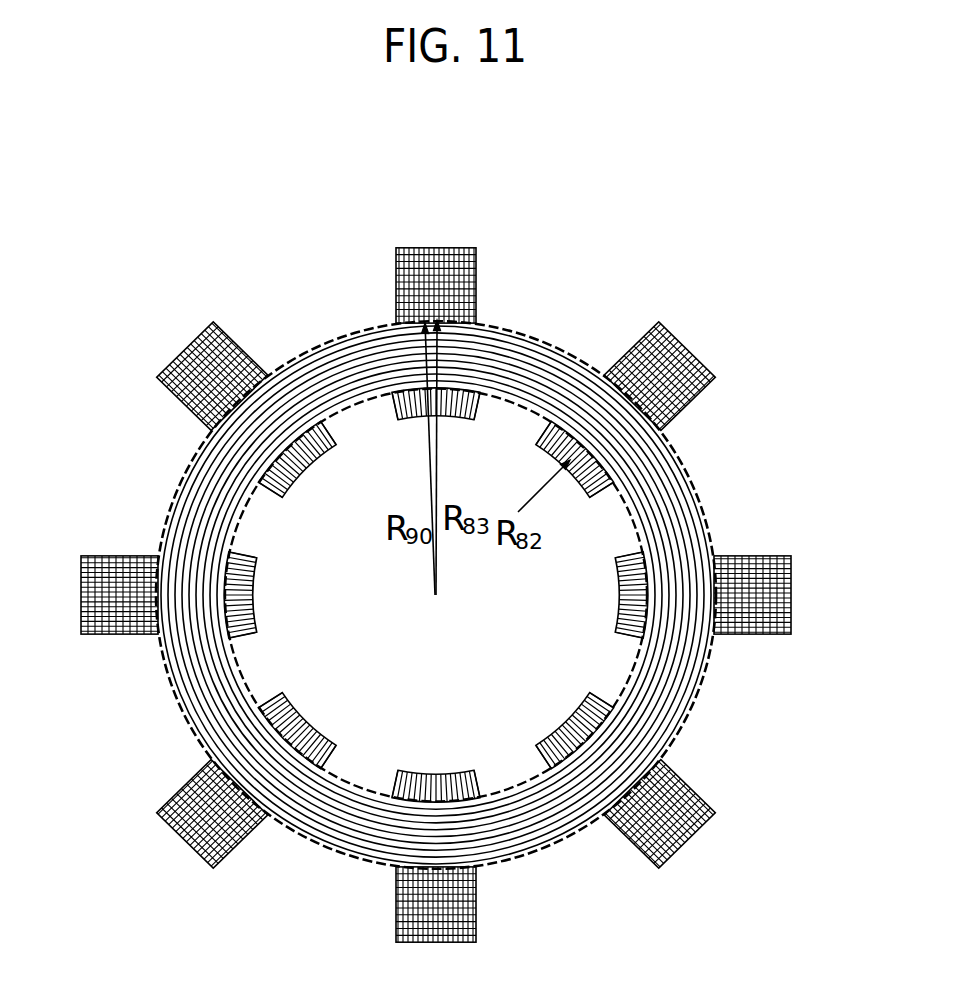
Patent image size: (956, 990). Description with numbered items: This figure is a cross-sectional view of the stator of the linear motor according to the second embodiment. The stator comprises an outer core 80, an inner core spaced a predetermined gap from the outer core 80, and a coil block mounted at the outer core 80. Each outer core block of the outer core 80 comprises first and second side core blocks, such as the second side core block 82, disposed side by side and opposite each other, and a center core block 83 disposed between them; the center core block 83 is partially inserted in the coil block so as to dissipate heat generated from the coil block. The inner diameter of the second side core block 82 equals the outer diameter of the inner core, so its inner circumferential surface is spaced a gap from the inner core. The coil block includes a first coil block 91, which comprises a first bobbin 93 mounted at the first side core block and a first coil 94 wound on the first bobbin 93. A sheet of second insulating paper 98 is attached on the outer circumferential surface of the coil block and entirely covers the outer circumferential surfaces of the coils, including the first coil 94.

The outer core 80 is at (716, 380).
The second side core block 82 is at (474, 398).
The center core block 83 is at (392, 268).
The first coil block 91 is at (370, 560).
The first bobbin 93 is at (232, 528).
The first coil 94 is at (187, 488).
The second insulating paper 98 is at (318, 345).